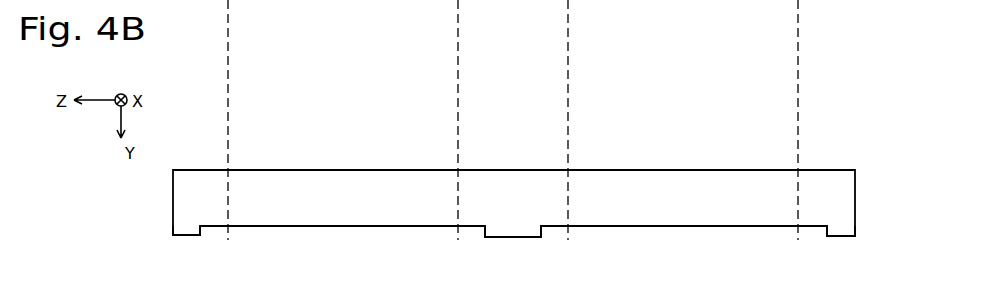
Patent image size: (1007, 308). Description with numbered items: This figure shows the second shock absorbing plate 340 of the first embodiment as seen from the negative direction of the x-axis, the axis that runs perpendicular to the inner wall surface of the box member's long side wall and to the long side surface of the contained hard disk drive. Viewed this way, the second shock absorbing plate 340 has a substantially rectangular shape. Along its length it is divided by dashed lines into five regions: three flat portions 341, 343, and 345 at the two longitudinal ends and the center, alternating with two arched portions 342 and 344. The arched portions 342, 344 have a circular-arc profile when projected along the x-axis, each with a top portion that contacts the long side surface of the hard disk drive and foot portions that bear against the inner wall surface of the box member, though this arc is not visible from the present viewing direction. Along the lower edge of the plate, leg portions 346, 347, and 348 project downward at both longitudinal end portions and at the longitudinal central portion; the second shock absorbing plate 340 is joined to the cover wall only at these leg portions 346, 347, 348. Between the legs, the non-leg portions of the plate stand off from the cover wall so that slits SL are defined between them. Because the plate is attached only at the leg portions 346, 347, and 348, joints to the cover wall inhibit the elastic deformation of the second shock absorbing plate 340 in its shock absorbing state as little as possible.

The second shock absorbing plate 340 is at (193, 75).
The flat portion 341 is at (195, 170).
The arched portion 342 is at (339, 170).
The flat portion 343 is at (513, 170).
The arched portion 344 is at (676, 176).
The flat portion 345 is at (829, 176).
The leg portion 346 is at (184, 237).
The leg portion 347 is at (510, 238).
The leg portion 348 is at (840, 237).
The slit SL is at (667, 276).